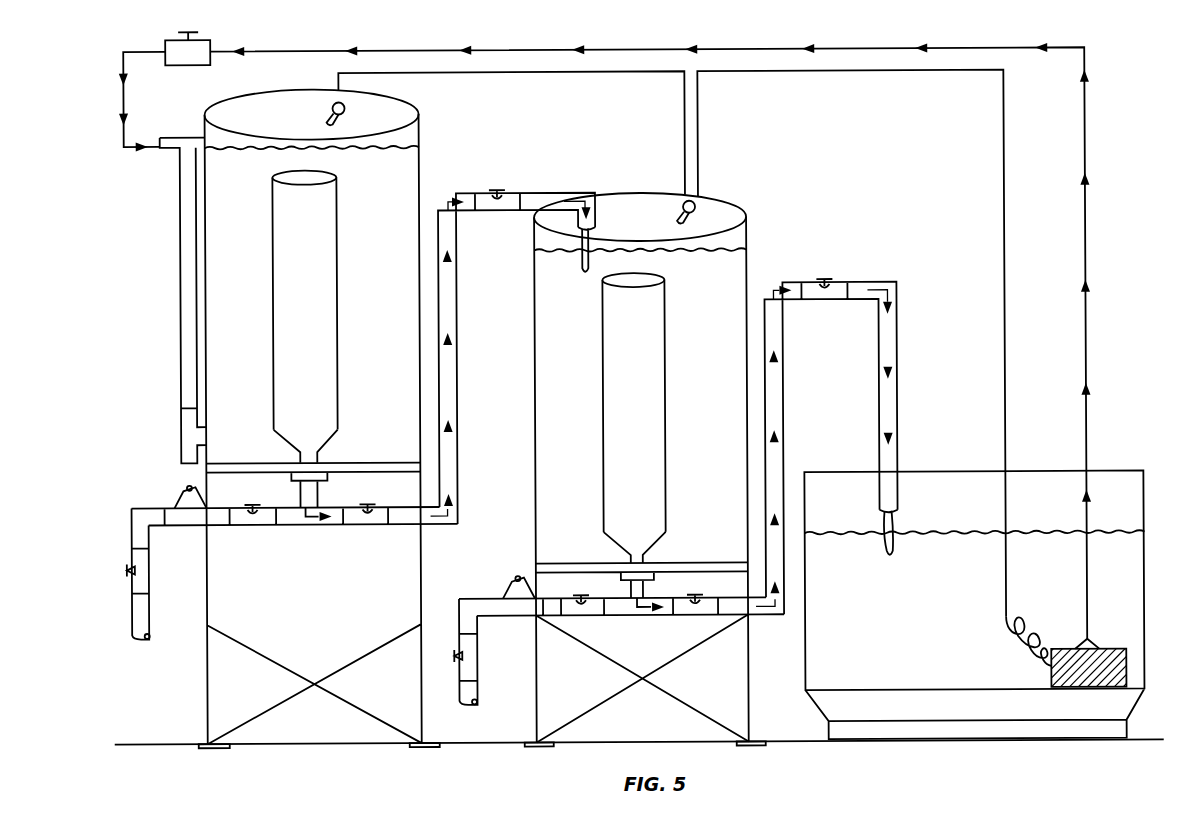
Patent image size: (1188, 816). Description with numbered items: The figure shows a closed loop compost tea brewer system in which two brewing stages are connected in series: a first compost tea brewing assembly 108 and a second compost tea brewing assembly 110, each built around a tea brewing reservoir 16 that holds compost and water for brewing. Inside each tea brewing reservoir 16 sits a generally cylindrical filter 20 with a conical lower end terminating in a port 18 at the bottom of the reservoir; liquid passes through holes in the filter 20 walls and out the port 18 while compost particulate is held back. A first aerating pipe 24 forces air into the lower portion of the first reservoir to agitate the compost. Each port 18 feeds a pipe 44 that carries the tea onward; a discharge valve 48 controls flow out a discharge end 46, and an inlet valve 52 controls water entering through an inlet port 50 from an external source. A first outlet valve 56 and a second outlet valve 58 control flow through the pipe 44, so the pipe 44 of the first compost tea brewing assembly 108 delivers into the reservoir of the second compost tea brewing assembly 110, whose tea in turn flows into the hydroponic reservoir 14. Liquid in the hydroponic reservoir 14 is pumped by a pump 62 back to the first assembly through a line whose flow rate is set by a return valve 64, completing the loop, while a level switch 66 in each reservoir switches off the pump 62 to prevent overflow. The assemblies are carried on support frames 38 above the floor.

The hydroponic reservoir 14 is at (930, 473).
The tea brewing reservoir 16 is at (420, 171).
The port 18 is at (297, 456).
The filter 20 is at (294, 316).
The first aerating pipe 24 is at (180, 274).
The support frame 38 is at (422, 553).
The pipe 44 is at (311, 524).
The discharge end 46 is at (143, 639).
The discharge valve 48 is at (150, 573).
The inlet port 50 is at (178, 494).
The inlet valve 52 is at (255, 524).
The first outlet valve 56 is at (368, 524).
The second outlet valve 58 is at (489, 191).
The pump 62 is at (1108, 651).
The return valve 64 is at (204, 40).
The level switch 66 is at (331, 109).
The first compost tea brewing assembly 108 is at (418, 127).
The second compost tea brewing assembly 110 is at (748, 232).